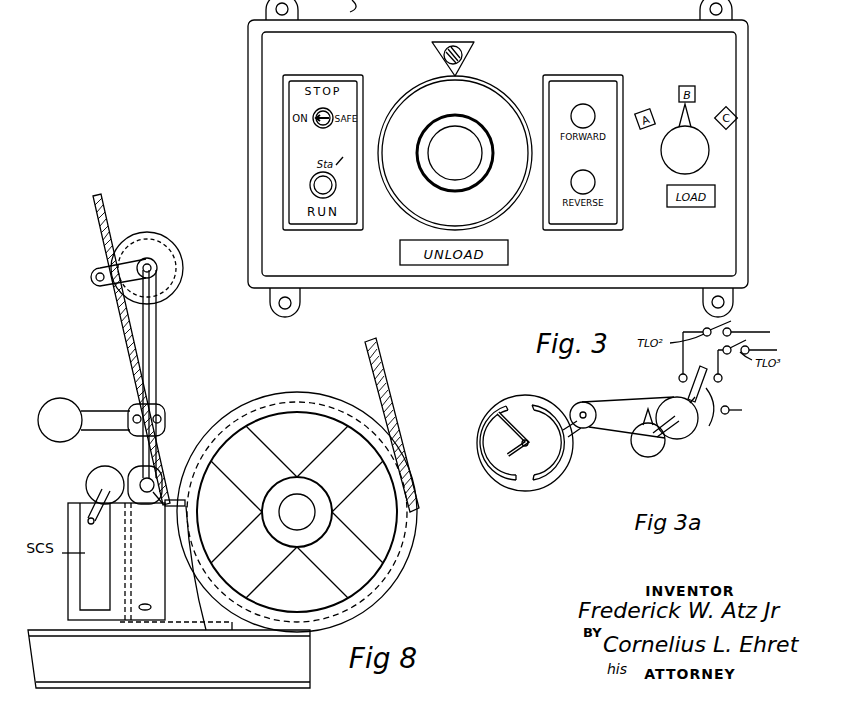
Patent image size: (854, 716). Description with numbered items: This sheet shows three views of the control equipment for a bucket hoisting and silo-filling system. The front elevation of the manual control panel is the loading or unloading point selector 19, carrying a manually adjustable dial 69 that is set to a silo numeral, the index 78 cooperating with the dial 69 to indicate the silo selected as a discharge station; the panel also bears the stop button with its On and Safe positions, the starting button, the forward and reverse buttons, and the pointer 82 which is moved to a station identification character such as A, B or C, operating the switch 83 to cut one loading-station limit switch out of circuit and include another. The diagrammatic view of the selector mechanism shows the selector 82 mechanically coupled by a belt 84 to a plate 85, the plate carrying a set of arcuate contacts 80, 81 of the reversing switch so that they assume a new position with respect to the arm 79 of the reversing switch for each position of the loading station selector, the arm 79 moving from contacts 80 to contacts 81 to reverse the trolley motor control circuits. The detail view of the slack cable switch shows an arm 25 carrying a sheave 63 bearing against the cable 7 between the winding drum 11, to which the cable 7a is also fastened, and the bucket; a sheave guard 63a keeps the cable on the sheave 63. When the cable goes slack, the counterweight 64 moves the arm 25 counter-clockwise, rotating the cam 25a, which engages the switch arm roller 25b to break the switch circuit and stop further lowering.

In FIG. 8, the cable 7 is at (105, 219).
In FIG. 8, the cable 7a is at (381, 373).
In FIG. 8, the drum 11 is at (357, 568).
In FIG. 3, the loading or unloading point selector 19 is at (263, 169).
In FIG. 8, the arm 25 is at (159, 333).
In FIG. 8, the cam 25a is at (130, 470).
In FIG. 8, the switch arm roller 25b is at (86, 488).
In FIG. 8, the sheave 63 is at (178, 277).
In FIG. 8, the sheave guard 63a is at (93, 272).
In FIG. 8, the counterweight 64 is at (89, 399).
In FIG. 3, the manually adjustable dial 69 is at (478, 82).
In FIG. 3, the index 78 is at (458, 40).
In FIG. 3A, the arms of the reversing switch 79 is at (504, 432).
In FIG. 3A, the arcuate contacts 80 is at (512, 408).
In FIG. 3A, the arcuate contacts 81 is at (558, 452).
In FIG. 3, the pointer 82 is at (703, 160).
In FIG. 3A, the pointer 82 is at (656, 457).
In FIG. 3A, the switch 83 is at (715, 402).
In FIG. 3A, the belt 84 is at (623, 401).
In FIG. 3A, the plate 85 is at (545, 478).